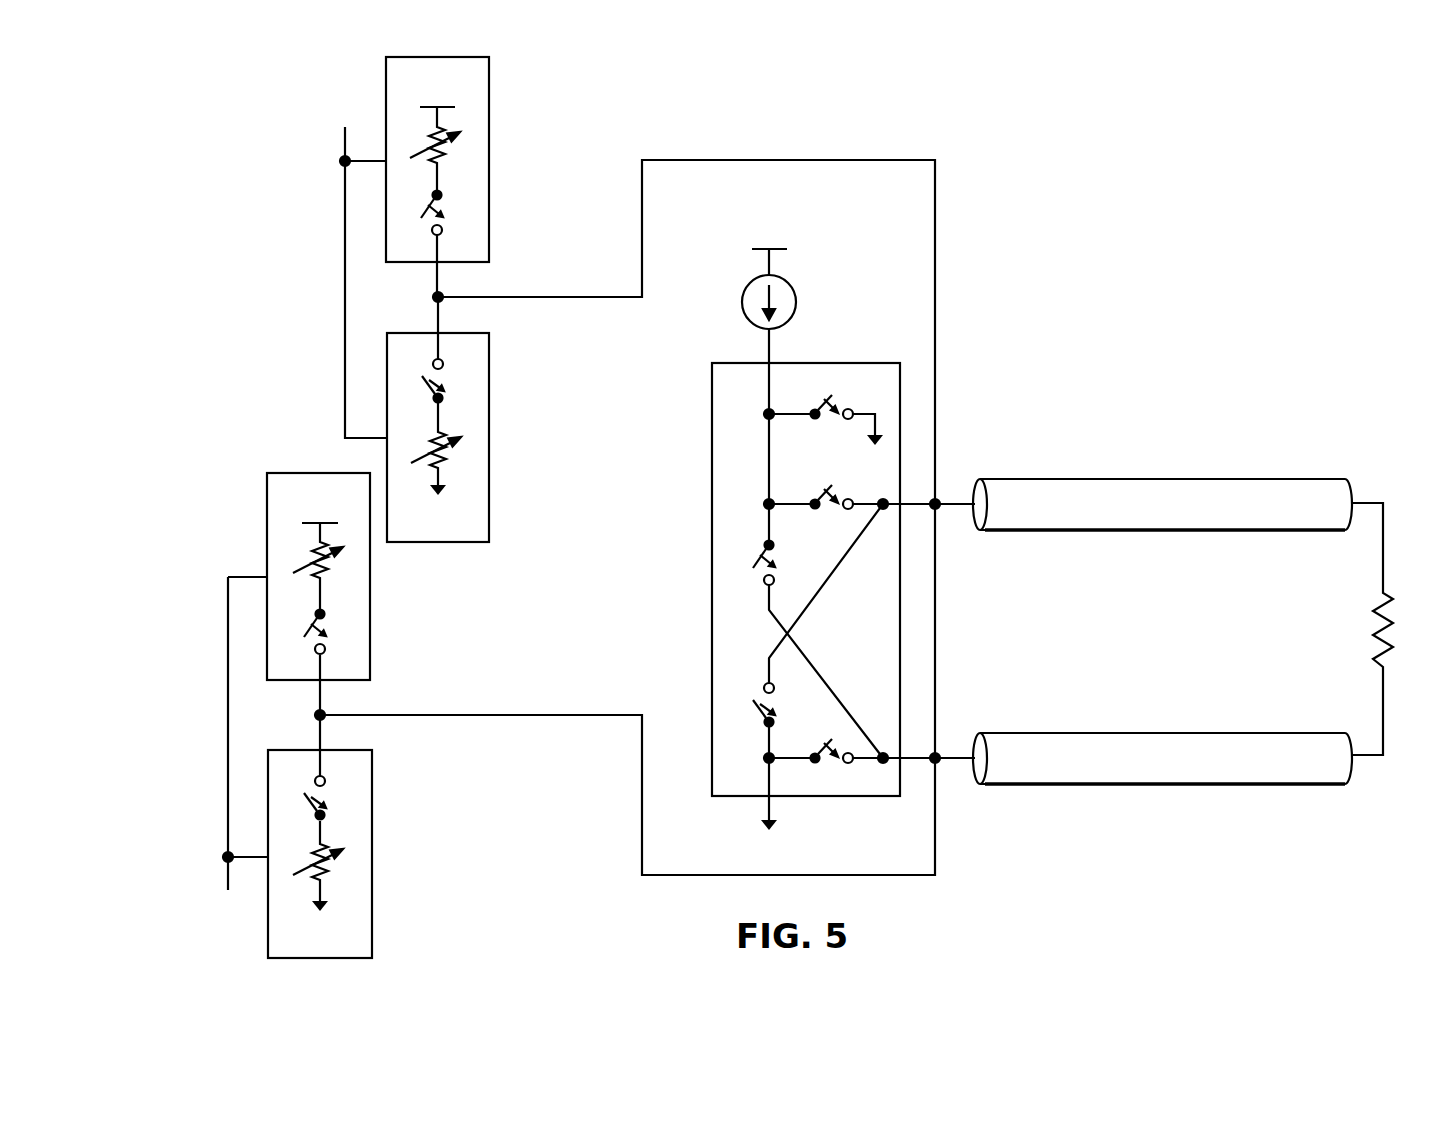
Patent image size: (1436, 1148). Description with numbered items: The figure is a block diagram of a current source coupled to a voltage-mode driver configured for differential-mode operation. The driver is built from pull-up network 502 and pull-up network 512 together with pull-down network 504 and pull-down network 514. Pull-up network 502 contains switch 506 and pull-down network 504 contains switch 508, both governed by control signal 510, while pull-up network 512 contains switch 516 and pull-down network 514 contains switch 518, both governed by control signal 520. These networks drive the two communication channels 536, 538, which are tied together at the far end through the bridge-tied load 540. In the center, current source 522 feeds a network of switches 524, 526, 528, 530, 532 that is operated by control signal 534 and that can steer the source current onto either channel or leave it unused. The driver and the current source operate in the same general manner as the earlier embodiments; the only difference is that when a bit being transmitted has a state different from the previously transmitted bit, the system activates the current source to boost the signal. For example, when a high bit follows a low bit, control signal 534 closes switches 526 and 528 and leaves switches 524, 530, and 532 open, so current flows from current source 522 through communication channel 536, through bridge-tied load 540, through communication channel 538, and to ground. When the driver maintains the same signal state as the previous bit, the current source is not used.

The pull-up network 502 is at (437, 159).
The pull-down network 504 is at (438, 437).
The switch 506 is at (553, 189).
The switch 508 is at (452, 397).
The control signal 510 is at (334, 257).
The pull-up network 512 is at (318, 576).
The pull-down network 514 is at (320, 854).
The switch 516 is at (343, 637).
The switch 518 is at (345, 803).
The control signal 520 is at (220, 761).
The current source 522 is at (783, 278).
The switch 524 is at (830, 387).
The switch 526 is at (822, 490).
The switch 528 is at (835, 730).
The switch 530 is at (752, 548).
The switch 532 is at (748, 700).
The control signal 534 is at (712, 578).
The communication channel 536 is at (1162, 504).
The communication channel 538 is at (1162, 758).
The bridge-tied load 540 is at (1365, 622).